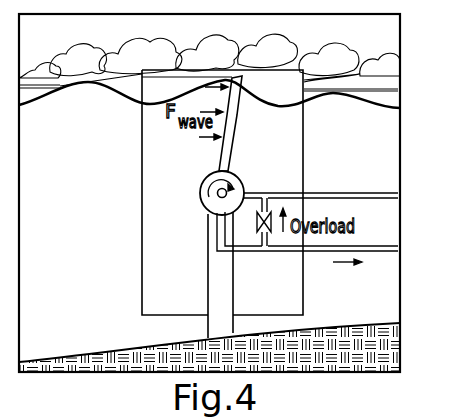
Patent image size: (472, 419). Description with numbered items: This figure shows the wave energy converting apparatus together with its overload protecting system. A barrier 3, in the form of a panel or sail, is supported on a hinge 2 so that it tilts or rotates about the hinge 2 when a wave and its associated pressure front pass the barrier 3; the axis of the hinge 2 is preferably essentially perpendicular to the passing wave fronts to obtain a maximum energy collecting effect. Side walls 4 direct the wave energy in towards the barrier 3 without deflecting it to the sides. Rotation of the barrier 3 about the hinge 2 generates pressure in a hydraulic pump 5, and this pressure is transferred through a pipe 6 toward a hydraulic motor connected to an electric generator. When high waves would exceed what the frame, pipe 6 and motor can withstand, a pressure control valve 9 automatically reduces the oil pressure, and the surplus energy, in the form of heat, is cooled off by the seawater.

The hinge 2 is at (243, 185).
The barrier 3 is at (221, 153).
The side walls 4 is at (150, 128).
The hydraulic pump 5 is at (200, 193).
The pipe 6 is at (284, 253).
The pressure control valve 9 is at (258, 221).